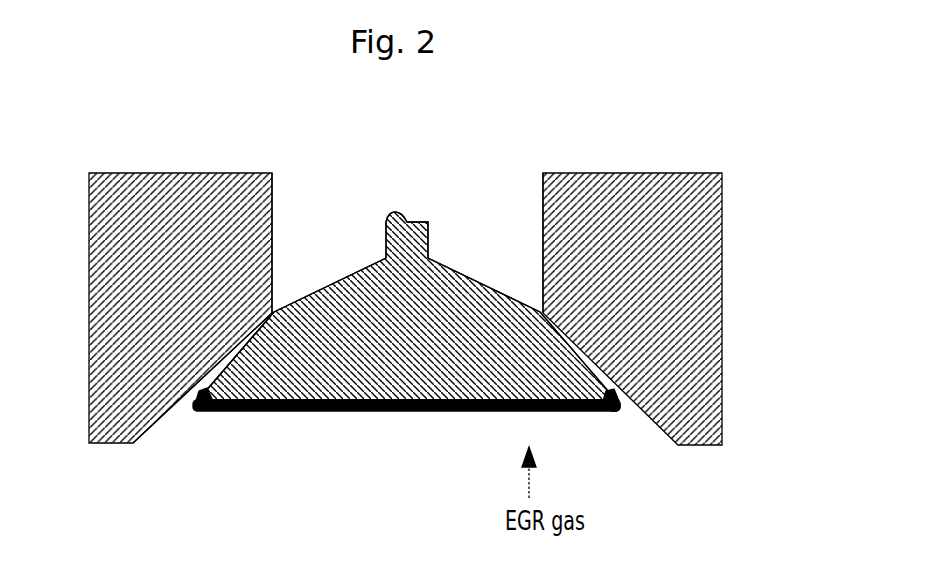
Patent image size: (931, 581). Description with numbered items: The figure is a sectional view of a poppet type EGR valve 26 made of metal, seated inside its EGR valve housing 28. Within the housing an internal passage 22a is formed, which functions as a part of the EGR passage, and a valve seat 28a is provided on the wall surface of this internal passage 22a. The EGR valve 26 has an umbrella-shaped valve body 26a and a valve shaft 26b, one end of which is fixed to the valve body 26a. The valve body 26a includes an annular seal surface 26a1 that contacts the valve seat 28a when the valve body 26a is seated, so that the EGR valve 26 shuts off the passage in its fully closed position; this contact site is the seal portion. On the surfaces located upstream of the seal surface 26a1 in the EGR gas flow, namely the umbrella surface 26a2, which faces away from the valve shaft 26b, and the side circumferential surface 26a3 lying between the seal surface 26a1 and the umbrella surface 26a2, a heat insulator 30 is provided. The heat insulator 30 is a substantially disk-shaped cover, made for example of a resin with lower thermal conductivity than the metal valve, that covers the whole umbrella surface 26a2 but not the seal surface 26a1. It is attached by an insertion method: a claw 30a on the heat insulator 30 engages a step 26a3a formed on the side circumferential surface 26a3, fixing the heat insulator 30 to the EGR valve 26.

The internal passage 22a is at (502, 194).
The EGR valve 26 is at (480, 266).
The valve body 26a is at (340, 318).
The valve shaft 26b is at (406, 220).
The seal surface 26a1 is at (268, 320).
The umbrella surface 26a2 is at (439, 413).
The side circumferential surface 26a3 is at (218, 410).
The step 26a3a is at (617, 407).
The EGR valve housing 28 is at (107, 425).
The valve seat 28a is at (244, 357).
The heat insulator 30 is at (368, 413).
The claw 30a is at (605, 413).